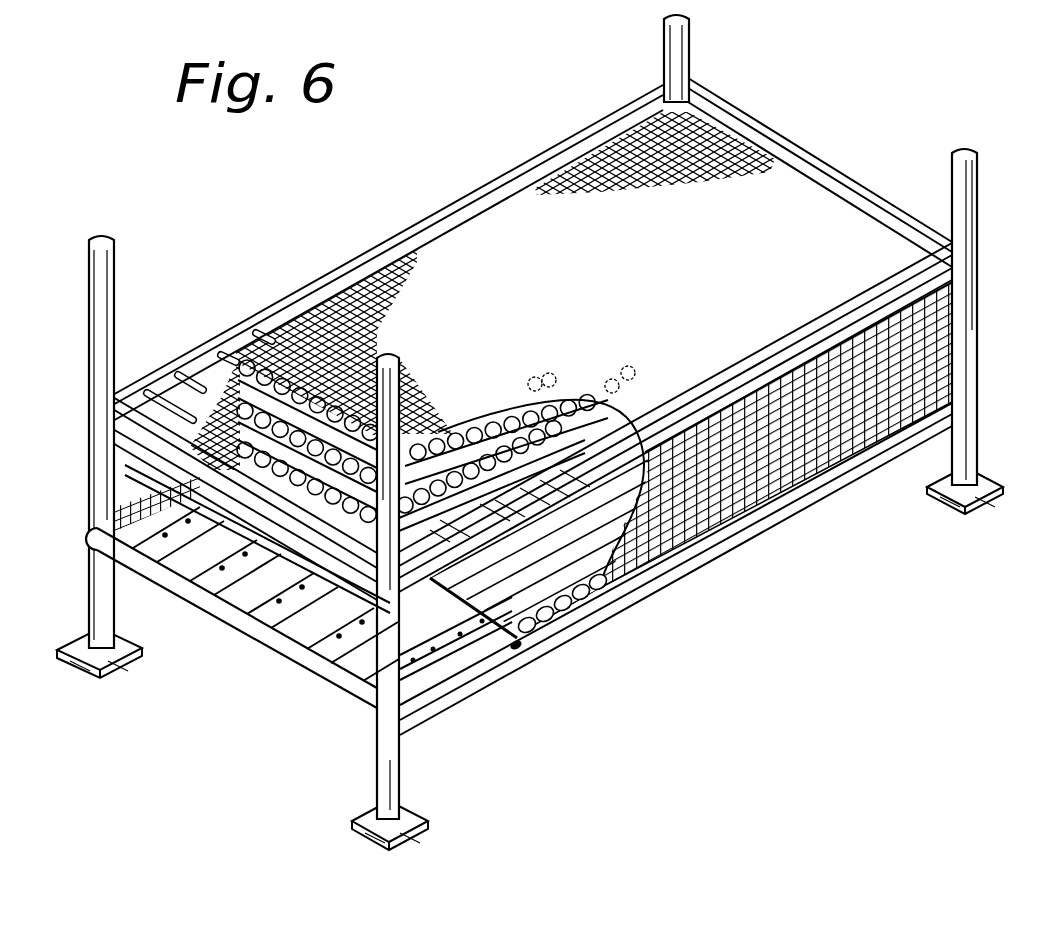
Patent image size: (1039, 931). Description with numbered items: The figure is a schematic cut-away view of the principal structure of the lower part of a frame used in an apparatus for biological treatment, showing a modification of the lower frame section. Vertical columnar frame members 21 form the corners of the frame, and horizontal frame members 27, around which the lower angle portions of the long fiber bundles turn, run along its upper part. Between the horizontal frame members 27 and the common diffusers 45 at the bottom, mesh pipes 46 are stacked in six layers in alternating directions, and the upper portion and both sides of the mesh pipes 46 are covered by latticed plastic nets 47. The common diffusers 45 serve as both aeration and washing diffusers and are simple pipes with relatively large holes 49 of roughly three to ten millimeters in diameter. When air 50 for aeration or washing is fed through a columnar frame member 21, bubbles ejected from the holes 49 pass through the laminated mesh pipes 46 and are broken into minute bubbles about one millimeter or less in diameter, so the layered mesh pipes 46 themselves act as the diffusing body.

The columnar frame member 21 is at (88, 337).
The horizontal frame member 27 is at (175, 400).
The common diffuser 45 is at (447, 656).
The mesh pipes 46 is at (222, 397).
The latticed plastic nets 47 is at (684, 366).
The holes 49 is at (221, 578).
The air 50 is at (100, 210).